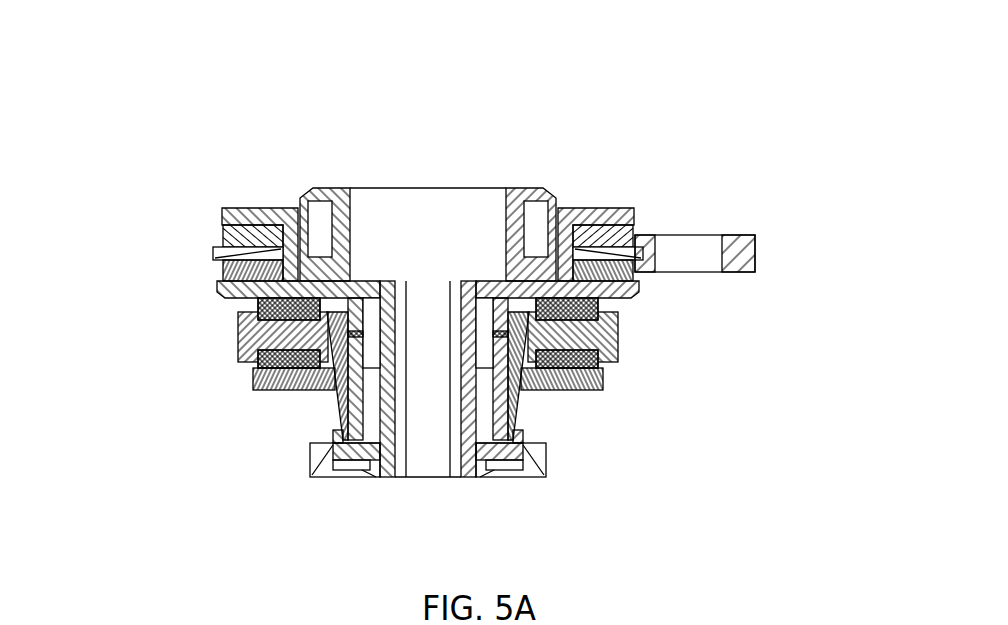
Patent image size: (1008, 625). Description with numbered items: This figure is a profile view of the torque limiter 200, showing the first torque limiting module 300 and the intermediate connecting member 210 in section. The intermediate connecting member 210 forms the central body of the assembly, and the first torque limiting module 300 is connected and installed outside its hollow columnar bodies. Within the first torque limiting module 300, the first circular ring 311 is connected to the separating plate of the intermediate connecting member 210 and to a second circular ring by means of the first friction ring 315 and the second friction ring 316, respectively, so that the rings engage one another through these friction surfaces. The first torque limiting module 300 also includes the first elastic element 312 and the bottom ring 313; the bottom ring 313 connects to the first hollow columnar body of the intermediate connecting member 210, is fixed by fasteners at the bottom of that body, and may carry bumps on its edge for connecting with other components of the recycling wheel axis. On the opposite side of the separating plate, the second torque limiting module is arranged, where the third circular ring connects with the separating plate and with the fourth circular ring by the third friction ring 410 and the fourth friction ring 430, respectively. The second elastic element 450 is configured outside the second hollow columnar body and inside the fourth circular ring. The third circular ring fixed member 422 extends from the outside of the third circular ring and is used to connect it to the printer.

The torque limiter 200 is at (200, 70).
The second elastic element 450 is at (489, 215).
The third friction ring 410 is at (326, 265).
The fourth friction ring 430 is at (353, 282).
The third circular ring fixed member 422 is at (753, 279).
The first circular ring 311 is at (539, 356).
The first friction ring 315 is at (304, 359).
The second friction ring 316 is at (338, 394).
The first elastic element 312 is at (583, 407).
The bottom ring 313 is at (335, 472).
The first torque limiting module 300 is at (190, 624).
The intermediate connecting member 210 is at (60, 613).